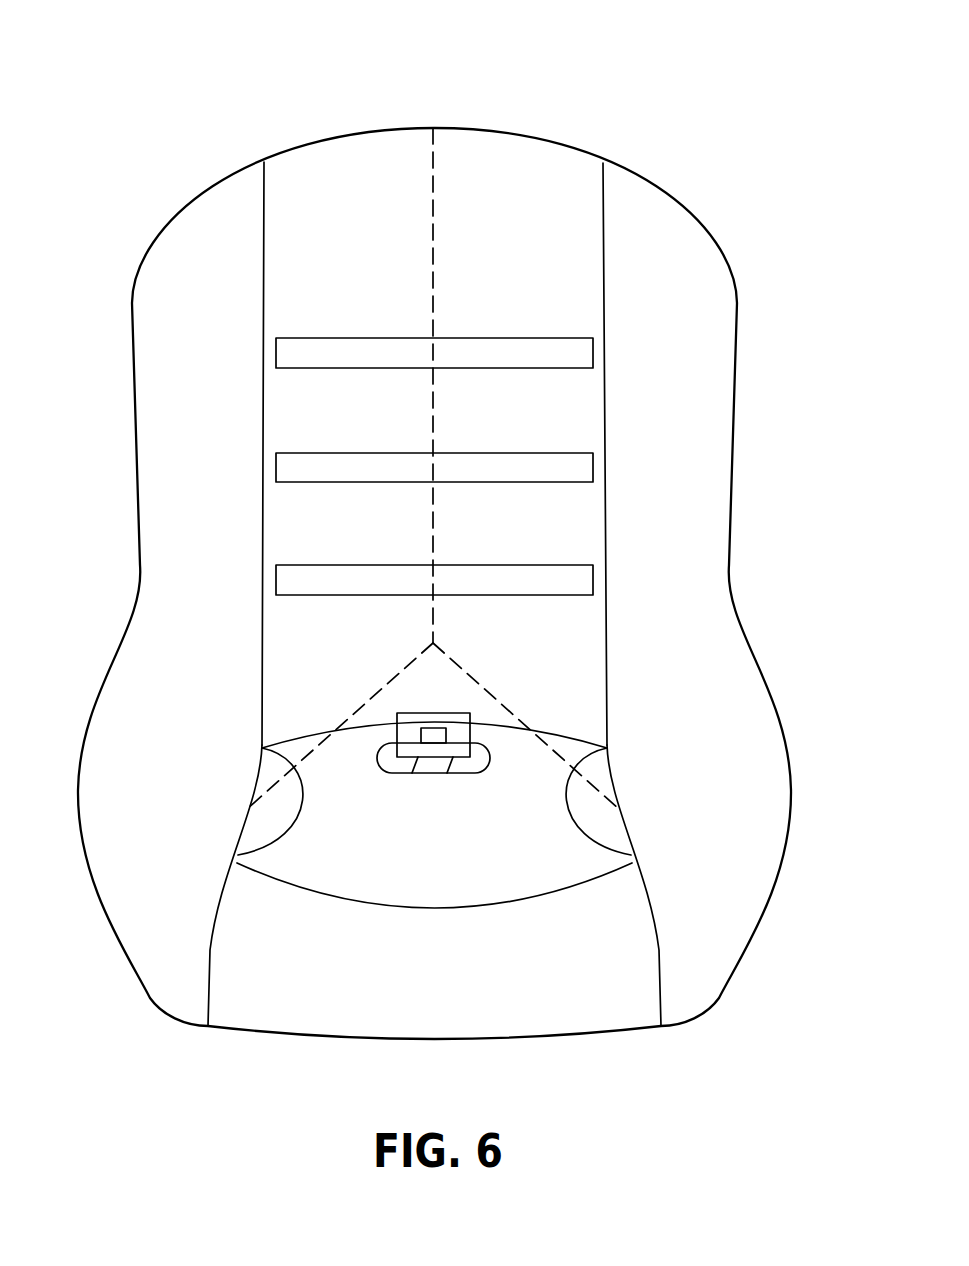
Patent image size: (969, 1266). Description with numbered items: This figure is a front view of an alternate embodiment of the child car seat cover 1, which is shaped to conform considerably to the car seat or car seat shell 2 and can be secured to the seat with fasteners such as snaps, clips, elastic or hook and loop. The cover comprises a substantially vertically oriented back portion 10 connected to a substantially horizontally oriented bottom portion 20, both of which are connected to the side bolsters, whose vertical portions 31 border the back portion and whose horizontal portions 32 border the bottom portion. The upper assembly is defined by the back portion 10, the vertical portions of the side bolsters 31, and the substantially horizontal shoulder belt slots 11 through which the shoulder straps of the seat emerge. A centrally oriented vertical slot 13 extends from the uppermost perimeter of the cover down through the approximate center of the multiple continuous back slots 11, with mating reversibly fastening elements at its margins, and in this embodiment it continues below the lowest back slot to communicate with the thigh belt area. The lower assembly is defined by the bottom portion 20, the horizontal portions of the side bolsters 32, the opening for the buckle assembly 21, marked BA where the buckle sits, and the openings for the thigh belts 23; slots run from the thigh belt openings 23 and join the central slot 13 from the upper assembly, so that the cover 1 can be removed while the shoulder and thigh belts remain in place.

The child car seat cover 1 is at (560, 177).
The car seat shell 2 is at (117, 448).
The back portion 10 is at (572, 669).
The shoulder belt slots 11 is at (329, 384).
The centrally oriented vertical slot 13 is at (433, 84).
The bottom portion 20 is at (446, 828).
The opening for the buckle assembly 21 is at (471, 788).
The openings for thigh belts 23 is at (270, 822).
The vertical portions of the side bolsters 31 is at (204, 274).
The horizontal portions of the side bolsters 32 is at (214, 784).
The buckle attachment BA is at (466, 706).